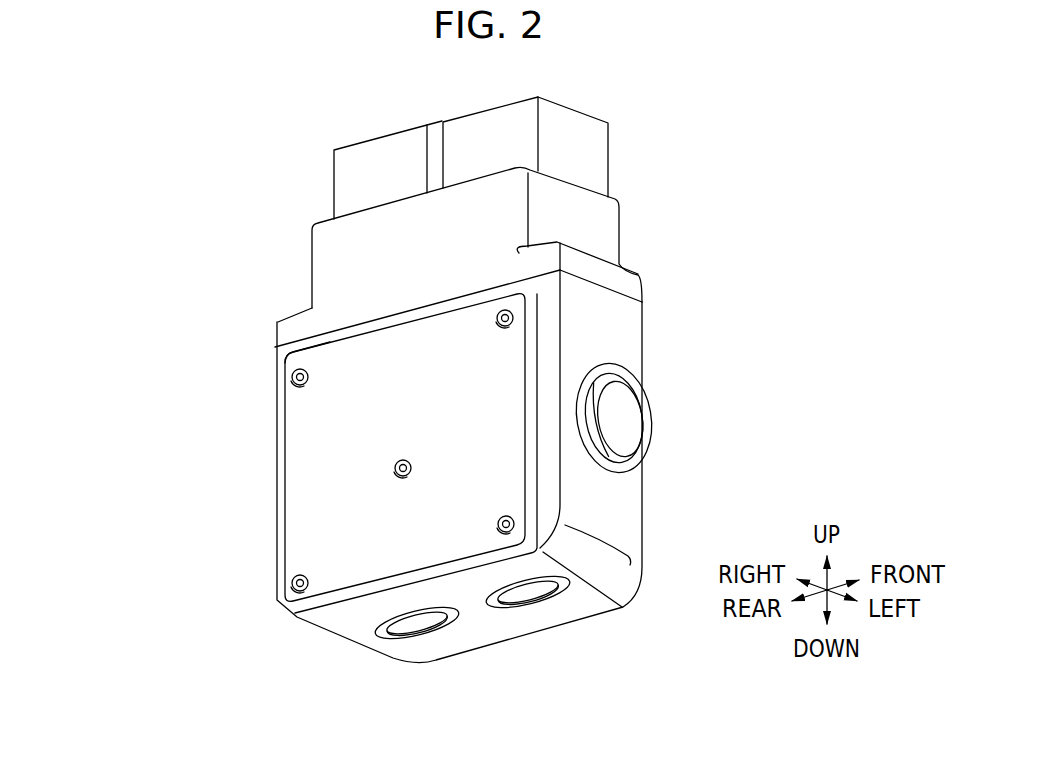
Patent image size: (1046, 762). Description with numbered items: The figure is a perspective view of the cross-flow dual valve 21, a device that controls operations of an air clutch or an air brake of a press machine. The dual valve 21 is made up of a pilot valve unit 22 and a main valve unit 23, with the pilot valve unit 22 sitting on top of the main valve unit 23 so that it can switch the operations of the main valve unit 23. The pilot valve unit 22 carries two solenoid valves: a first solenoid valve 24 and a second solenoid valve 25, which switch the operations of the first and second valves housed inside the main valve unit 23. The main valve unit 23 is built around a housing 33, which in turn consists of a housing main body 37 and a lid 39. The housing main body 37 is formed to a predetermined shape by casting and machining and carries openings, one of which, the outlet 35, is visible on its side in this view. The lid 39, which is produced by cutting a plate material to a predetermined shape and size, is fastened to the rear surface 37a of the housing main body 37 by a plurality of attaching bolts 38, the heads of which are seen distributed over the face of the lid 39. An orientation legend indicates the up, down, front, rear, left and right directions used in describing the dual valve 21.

The cross-flow dual valve 21 is at (127, 137).
The pilot valve unit 22 is at (284, 276).
The main valve unit 23 is at (262, 474).
The first solenoid valve 24 is at (347, 140).
The second solenoid valve 25 is at (617, 132).
The housing 33 is at (738, 305).
The outlet 35 is at (632, 448).
The housing main body 37 is at (639, 366).
The rear surface 37a is at (333, 338).
The attaching bolts 38 is at (291, 375).
The lid 39 is at (512, 360).